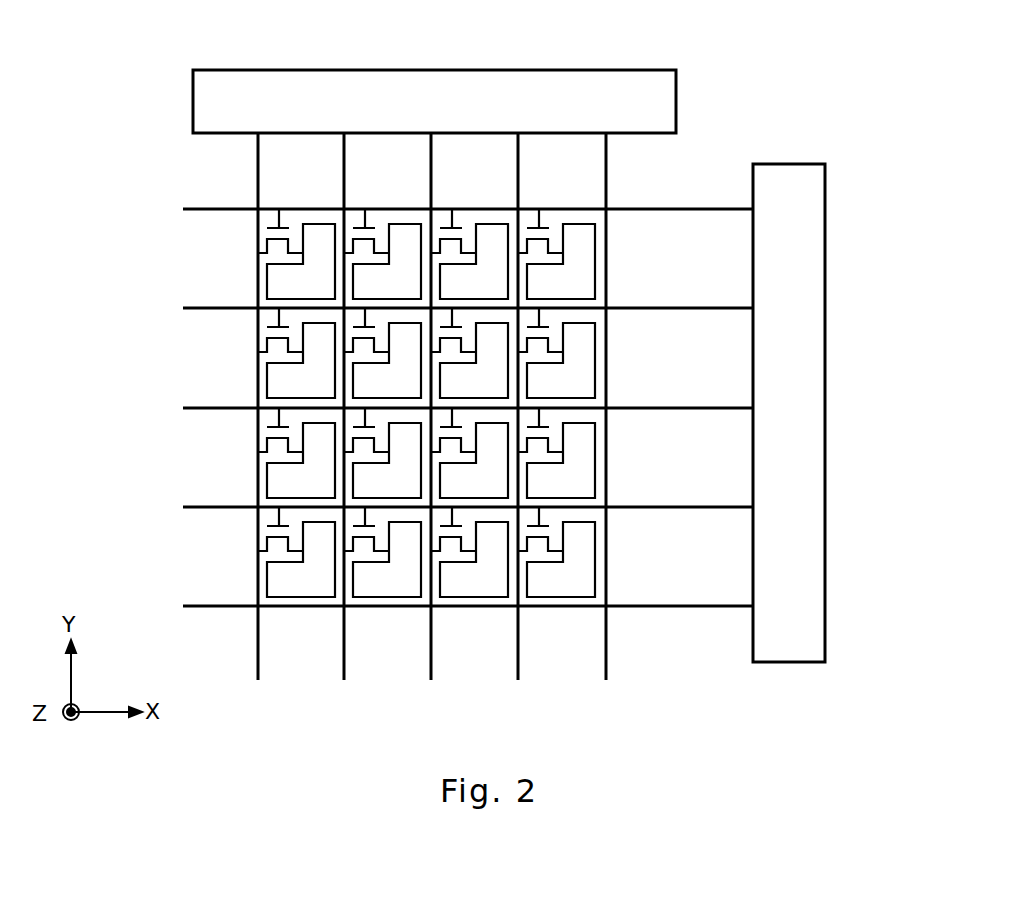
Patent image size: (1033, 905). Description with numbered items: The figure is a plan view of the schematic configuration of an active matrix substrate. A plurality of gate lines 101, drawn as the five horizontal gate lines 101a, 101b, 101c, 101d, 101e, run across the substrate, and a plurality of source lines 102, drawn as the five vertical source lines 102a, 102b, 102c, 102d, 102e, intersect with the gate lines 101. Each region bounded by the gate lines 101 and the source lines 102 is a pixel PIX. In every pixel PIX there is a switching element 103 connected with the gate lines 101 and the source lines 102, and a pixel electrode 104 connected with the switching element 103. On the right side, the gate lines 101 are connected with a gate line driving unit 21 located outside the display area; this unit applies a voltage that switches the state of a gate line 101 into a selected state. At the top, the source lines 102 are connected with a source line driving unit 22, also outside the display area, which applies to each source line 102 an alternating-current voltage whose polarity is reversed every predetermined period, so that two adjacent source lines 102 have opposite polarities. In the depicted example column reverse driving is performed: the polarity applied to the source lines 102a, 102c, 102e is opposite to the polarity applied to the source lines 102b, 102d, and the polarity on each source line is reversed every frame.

The gate line driving unit 21 is at (825, 164).
The source line driving unit 22 is at (676, 70).
The gate lines 101 is at (417, 378).
The gate line 101a is at (195, 206).
The gate line 101b is at (195, 305).
The gate line 101c is at (195, 405).
The gate line 101d is at (195, 504).
The gate line 101e is at (450, 580).
The source lines 102 is at (480, 444).
The source line 102a is at (258, 655).
The source line 102b is at (344, 655).
The source line 102c is at (431, 655).
The source line 102d is at (518, 655).
The source line 102e is at (647, 415).
The switching element 103 is at (289, 207).
The pixel electrode 104 is at (327, 292).
The pixel PIX is at (606, 211).